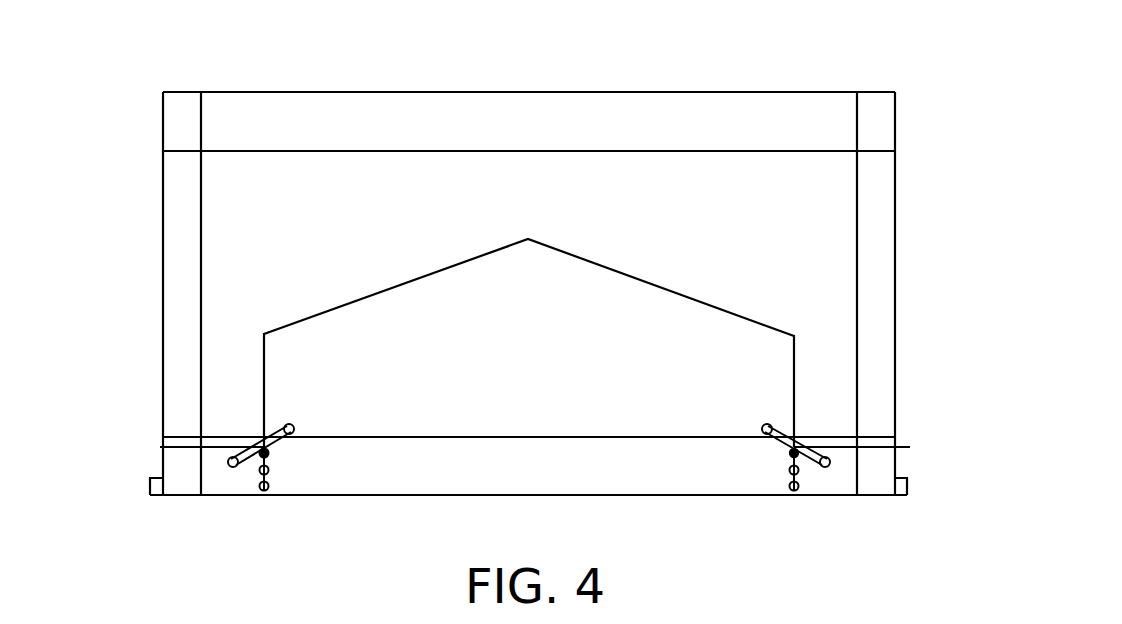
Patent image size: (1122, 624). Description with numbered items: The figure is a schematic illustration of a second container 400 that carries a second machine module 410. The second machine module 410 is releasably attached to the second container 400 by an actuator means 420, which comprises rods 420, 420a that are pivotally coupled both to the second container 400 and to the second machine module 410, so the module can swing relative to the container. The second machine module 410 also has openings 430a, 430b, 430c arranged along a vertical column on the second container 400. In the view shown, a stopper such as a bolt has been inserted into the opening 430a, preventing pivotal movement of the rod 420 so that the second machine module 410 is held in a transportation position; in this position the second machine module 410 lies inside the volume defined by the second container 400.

The second container 400 is at (904, 59).
The second machine module 410 is at (794, 341).
The actuator means 420 is at (910, 447).
The rod 420a is at (160, 450).
The opening 430a is at (791, 457).
The opening 430b is at (798, 474).
The opening 430c is at (796, 492).